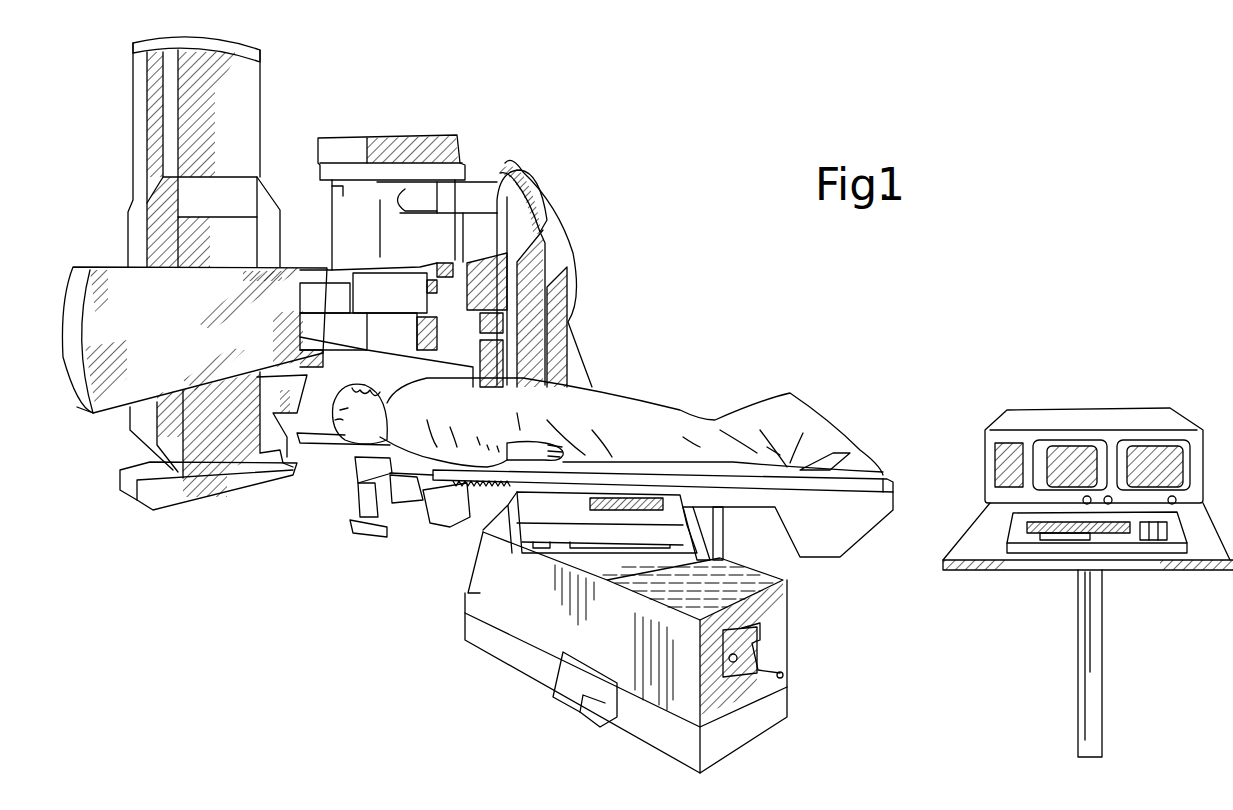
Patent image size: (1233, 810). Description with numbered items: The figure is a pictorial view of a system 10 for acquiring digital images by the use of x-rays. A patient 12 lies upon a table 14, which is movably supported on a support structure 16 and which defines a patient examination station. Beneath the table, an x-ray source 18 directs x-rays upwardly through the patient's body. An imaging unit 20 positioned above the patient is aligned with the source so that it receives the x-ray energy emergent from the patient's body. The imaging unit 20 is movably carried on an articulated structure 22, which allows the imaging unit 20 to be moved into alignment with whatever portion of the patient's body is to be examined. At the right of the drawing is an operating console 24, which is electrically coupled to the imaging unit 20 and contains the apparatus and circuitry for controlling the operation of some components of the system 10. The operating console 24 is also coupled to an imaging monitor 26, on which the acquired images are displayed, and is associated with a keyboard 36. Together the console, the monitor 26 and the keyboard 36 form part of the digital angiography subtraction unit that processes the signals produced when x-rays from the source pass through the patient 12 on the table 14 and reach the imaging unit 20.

The system 10 is at (745, 303).
The patient 12 is at (795, 397).
The table 14 is at (895, 492).
The support structure 16 is at (787, 635).
The x-ray source 18 is at (429, 538).
The imaging unit 20 is at (411, 133).
The articulated structure 22 is at (272, 142).
The operating console 24 is at (1072, 383).
The imaging monitor 26 is at (1085, 447).
The keyboard 36 is at (1110, 540).